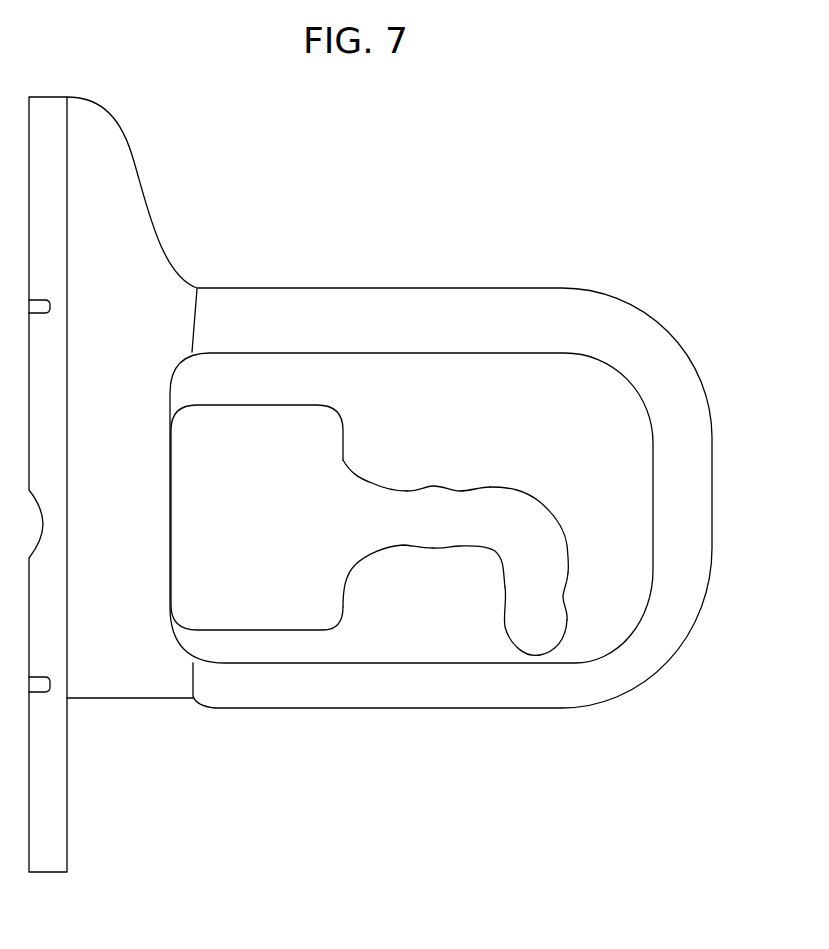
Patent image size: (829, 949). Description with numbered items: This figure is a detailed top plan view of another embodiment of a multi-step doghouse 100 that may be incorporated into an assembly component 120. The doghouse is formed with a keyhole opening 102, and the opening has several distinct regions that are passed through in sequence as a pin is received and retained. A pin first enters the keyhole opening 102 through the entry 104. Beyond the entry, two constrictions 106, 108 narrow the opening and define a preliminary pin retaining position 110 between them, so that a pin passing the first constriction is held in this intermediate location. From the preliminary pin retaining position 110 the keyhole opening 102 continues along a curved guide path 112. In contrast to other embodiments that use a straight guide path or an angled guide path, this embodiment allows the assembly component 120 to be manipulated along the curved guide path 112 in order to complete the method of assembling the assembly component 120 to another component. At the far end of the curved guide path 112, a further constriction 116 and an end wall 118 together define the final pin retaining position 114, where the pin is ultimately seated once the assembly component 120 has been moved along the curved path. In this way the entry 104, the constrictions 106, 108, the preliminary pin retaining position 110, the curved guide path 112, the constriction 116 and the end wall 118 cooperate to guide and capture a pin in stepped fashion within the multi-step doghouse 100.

The multi-step doghouse 100 is at (623, 233).
The keyhole opening 102 is at (321, 539).
The entry 104 is at (372, 478).
The constriction 106 is at (403, 545).
The constriction 108 is at (460, 546).
The preliminary pin retaining position 110 is at (430, 522).
The curved guide path 112 is at (530, 528).
The final pin retaining position 114 is at (533, 628).
The constriction 116 is at (563, 597).
The end wall 118 is at (530, 647).
The assembly component 120 is at (84, 118).